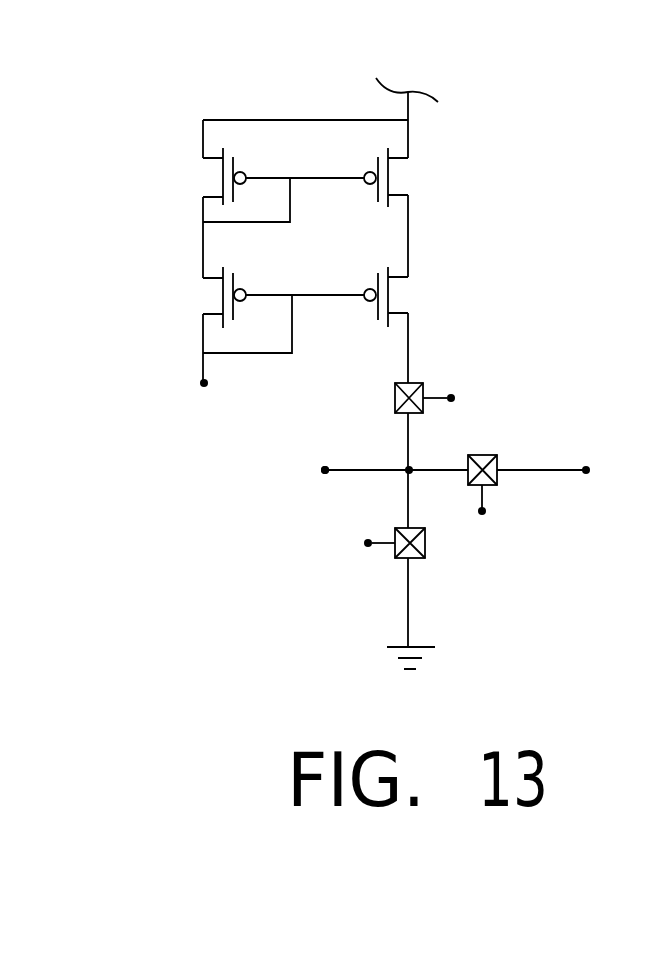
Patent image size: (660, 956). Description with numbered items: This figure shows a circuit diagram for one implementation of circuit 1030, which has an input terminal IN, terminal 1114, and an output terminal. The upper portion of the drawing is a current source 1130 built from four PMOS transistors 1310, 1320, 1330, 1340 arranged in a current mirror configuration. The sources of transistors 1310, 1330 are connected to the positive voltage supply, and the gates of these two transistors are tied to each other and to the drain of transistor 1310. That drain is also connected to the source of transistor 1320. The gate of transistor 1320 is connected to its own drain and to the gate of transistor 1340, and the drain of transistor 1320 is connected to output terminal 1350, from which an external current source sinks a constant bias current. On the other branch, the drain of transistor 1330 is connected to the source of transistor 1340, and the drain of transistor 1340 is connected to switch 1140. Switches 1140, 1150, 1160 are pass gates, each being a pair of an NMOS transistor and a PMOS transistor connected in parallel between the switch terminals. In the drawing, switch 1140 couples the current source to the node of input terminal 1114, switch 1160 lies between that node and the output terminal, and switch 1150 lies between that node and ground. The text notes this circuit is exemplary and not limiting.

The circuit 1030 is at (268, 67).
The PMOS transistor 1310 is at (217, 182).
The PMOS transistor 1320 is at (212, 297).
The PMOS transistor 1330 is at (403, 182).
The PMOS transistor 1340 is at (403, 293).
The output terminal 1350 is at (204, 383).
The current source 1130 is at (498, 217).
The switch 1140 is at (395, 405).
The switch 1150 is at (425, 548).
The switch 1160 is at (482, 455).
The input terminal 1114 is at (325, 476).